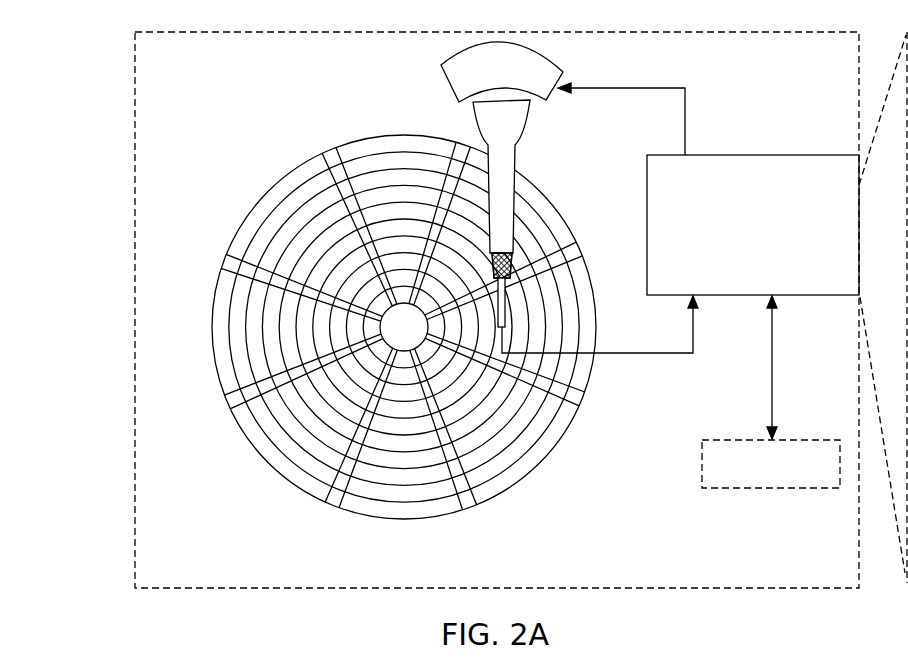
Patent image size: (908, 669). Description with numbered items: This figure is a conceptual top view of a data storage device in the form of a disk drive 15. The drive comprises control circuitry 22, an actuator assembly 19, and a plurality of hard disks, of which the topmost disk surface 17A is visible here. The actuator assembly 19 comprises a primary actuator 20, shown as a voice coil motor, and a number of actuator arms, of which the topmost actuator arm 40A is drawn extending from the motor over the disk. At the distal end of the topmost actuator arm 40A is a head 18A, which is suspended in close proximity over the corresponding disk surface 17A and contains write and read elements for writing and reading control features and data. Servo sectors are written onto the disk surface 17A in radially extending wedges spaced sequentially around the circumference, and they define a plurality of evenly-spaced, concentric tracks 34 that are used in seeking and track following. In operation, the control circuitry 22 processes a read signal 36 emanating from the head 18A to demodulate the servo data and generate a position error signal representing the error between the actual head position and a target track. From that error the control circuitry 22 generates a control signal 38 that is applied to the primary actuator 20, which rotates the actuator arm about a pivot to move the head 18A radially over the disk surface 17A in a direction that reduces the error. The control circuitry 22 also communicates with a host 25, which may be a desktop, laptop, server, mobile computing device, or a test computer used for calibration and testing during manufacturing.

The disk drive 15 is at (132, 172).
The topmost disk surface 17A is at (404, 333).
The head 18A is at (516, 322).
The actuator assembly 19 is at (566, 100).
The primary actuator 20 is at (566, 75).
The control circuitry 22 is at (753, 225).
The host 25 is at (771, 392).
The concentric tracks 34 is at (388, 163).
The read signal 36 is at (660, 355).
The control signal 38 is at (688, 100).
The topmost actuator arm 40A is at (518, 148).